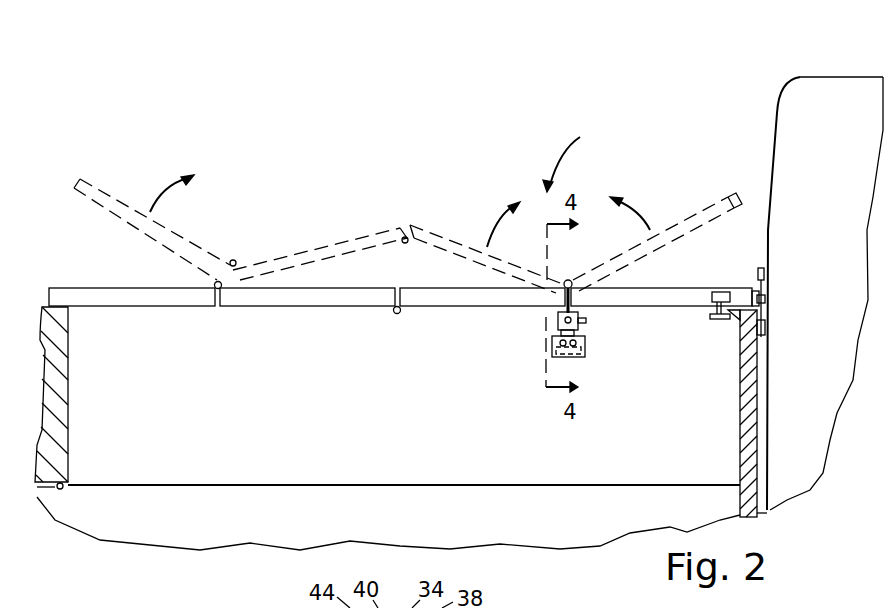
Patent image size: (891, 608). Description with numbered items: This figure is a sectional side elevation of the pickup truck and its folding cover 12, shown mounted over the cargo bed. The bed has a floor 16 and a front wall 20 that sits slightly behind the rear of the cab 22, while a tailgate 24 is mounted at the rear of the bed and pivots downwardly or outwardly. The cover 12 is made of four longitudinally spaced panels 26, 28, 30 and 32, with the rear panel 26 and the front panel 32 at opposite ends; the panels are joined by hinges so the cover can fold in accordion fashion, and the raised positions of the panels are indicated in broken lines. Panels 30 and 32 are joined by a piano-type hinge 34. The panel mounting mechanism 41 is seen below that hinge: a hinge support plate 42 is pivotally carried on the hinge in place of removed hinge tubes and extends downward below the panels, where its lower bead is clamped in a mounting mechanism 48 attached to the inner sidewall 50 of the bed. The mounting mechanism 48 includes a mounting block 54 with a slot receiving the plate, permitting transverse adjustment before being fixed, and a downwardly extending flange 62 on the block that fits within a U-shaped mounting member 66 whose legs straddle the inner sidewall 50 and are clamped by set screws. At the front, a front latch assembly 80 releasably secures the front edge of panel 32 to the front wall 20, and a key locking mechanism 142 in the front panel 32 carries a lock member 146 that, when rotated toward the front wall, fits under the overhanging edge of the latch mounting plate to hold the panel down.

The folding cover 12 is at (572, 153).
The floor 16 is at (407, 485).
The front wall 20 is at (740, 433).
The cab 22 is at (782, 90).
The tailgate 24 is at (68, 400).
The panel 26 is at (138, 210).
The panel 28 is at (313, 247).
The panel 30 is at (460, 240).
The front panel 32 is at (697, 213).
The hinge 34 is at (572, 280).
The panel mounting mechanism 41 is at (533, 375).
The hinge support plate 42 is at (558, 315).
The mounting mechanism 48 is at (606, 329).
The inner sidewall 50 is at (347, 404).
The mounting block 54 is at (560, 332).
The flange 62 is at (585, 349).
The U-shaped mounting member 66 is at (553, 343).
The front latch assembly 80 is at (760, 262).
The key locking mechanism 142 is at (718, 292).
The lock member 146 is at (730, 330).